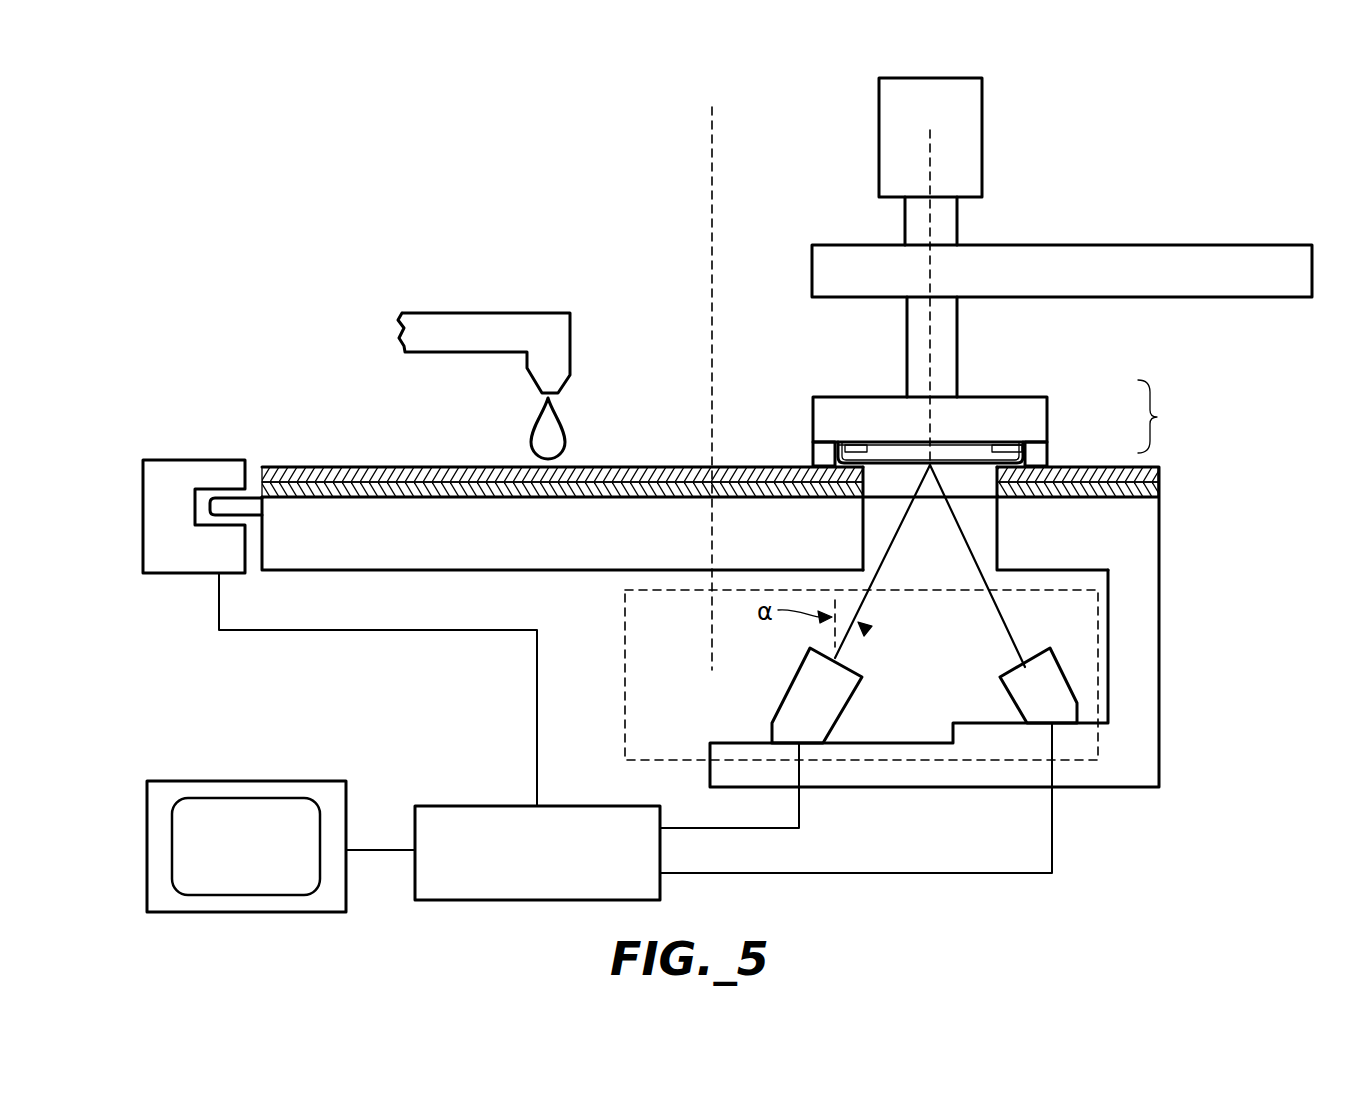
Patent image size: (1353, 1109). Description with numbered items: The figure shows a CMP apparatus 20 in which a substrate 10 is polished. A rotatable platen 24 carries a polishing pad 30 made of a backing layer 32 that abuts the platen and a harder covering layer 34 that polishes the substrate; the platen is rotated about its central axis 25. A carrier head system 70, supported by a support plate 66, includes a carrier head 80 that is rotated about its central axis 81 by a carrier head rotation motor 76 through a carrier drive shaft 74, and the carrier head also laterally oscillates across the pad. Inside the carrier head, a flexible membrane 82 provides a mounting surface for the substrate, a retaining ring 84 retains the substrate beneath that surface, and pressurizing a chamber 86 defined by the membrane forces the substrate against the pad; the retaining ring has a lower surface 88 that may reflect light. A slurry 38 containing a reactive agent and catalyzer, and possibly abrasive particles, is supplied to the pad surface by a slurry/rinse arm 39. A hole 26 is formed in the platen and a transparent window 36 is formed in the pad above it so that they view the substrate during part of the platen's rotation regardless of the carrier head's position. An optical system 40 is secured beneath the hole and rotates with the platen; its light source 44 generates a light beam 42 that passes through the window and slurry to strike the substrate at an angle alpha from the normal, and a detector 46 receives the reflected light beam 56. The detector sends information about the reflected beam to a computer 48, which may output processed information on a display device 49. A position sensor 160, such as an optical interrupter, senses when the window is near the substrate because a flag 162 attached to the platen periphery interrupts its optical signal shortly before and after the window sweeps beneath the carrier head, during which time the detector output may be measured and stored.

The substrate 10 is at (1045, 464).
The CMP apparatus 20 is at (357, 216).
The rotatable platen 24 is at (1161, 545).
The central axis 25 is at (712, 172).
The hole 26 is at (998, 505).
The polishing pad 30 is at (358, 455).
The backing layer 32 is at (1161, 491).
The covering layer 34 is at (1161, 470).
The transparent window 36 is at (960, 500).
The slurry 38 is at (566, 433).
The slurry/rinse arm 39 is at (500, 313).
The optical system 40 is at (623, 643).
The light beam 42 is at (868, 607).
The light source 44 is at (787, 685).
The detector 46 is at (1010, 700).
The computer 48 is at (502, 806).
The display device 49 is at (278, 781).
The reflected light beam 56 is at (1003, 613).
The support plate 66 is at (1150, 245).
The carrier head system 70 is at (1167, 416).
The carrier drive shaft 74 is at (958, 235).
The carrier head rotation motor 76 is at (985, 148).
The carrier head 80 is at (1035, 419).
The central axis 81 is at (932, 345).
The flexible membrane 82 is at (892, 450).
The retaining ring 84 is at (823, 457).
The chamber 86 is at (968, 447).
The lower surface 88 is at (815, 497).
The position sensor 160 is at (203, 574).
The flag 162 is at (256, 483).